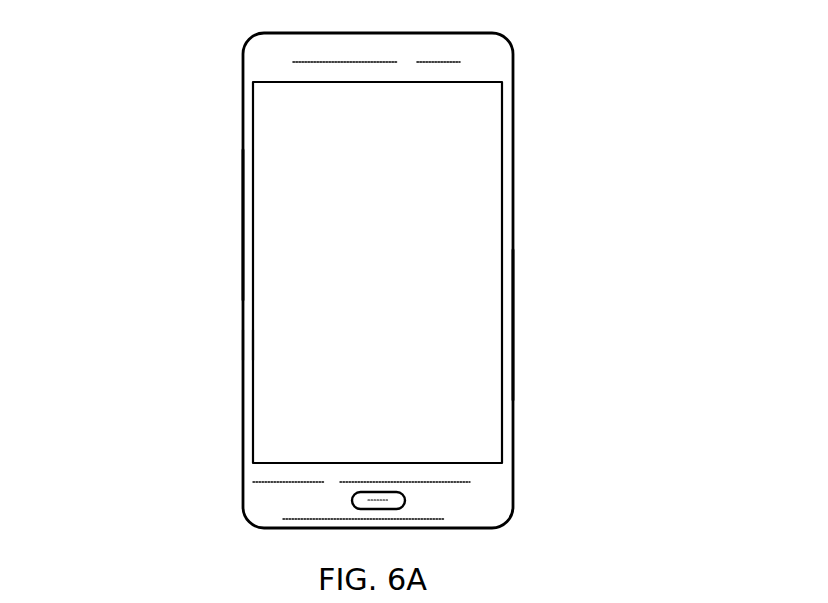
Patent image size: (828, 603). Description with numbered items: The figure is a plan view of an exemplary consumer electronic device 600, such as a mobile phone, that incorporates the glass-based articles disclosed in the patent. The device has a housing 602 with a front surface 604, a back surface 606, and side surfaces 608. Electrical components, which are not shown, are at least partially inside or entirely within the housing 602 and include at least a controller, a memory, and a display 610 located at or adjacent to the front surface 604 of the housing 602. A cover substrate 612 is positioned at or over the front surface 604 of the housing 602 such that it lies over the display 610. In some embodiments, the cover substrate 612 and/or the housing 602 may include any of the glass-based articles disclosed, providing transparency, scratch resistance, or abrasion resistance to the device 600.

The consumer electronic device 600 is at (538, 90).
The housing 602 is at (262, 67).
The front surface 604 is at (462, 501).
The back surface 606 is at (283, 216).
The side surfaces 608 is at (488, 323).
The display 610 is at (447, 227).
The cover substrate 612 is at (290, 349).